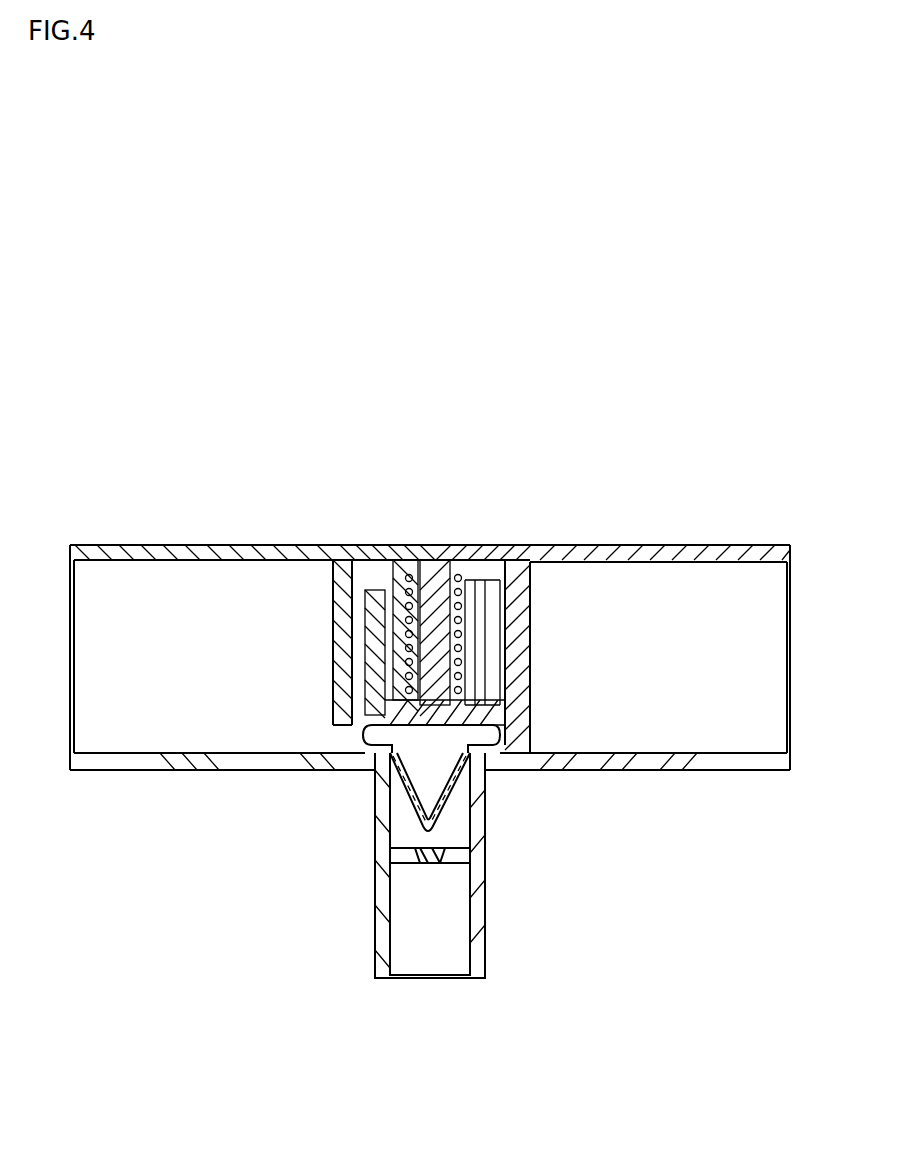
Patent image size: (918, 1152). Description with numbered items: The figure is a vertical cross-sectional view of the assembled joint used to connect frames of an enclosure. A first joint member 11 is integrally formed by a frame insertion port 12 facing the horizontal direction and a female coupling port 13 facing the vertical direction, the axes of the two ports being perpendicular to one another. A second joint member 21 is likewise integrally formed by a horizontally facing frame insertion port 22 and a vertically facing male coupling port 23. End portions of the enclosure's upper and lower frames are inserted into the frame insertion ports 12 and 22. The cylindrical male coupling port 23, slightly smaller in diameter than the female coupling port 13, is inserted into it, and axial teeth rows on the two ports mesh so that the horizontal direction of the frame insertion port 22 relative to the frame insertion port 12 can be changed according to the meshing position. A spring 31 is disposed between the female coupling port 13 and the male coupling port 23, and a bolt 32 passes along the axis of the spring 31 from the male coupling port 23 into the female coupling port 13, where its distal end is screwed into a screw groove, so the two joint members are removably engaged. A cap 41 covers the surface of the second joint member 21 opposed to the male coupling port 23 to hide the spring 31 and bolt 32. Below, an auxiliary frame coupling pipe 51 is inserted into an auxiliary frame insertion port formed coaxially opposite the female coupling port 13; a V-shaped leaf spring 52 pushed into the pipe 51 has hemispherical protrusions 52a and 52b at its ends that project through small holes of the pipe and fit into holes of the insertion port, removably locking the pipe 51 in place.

The first joint member 11 is at (222, 607).
The frame insertion port 12 is at (205, 618).
The female coupling port 13 is at (316, 654).
The second joint member 21 is at (637, 601).
The frame insertion port 22 is at (665, 618).
The male coupling port 23 is at (489, 649).
The spring 31 is at (495, 587).
The bolt 32 is at (448, 580).
The cap 41 is at (445, 599).
The auxiliary frame coupling pipe 51 is at (475, 865).
The V-shaped leaf spring 52 is at (454, 784).
The hemispherical protrusion 52a is at (344, 791).
The hemispherical protrusion 52b is at (540, 732).